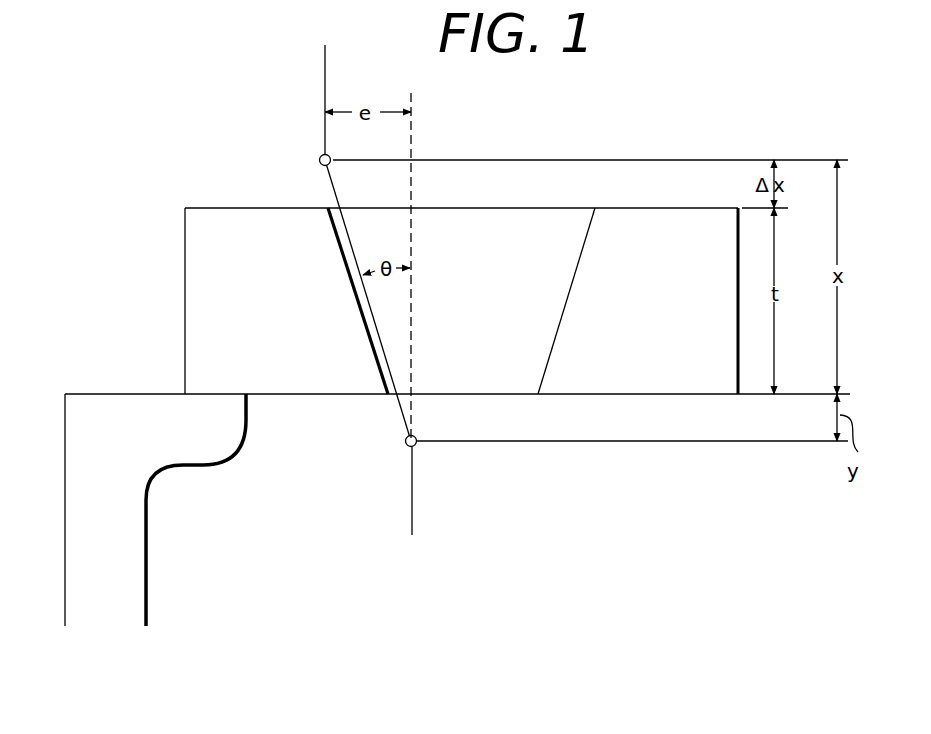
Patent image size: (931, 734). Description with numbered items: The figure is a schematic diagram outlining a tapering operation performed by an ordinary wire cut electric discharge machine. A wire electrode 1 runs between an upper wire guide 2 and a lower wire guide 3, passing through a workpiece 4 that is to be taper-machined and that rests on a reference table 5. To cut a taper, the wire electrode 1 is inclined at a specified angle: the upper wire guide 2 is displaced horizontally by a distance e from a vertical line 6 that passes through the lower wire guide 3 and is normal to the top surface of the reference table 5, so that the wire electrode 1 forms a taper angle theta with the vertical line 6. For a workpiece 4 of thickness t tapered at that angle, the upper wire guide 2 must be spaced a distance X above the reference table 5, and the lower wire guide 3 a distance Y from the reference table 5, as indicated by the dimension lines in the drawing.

The wire electrode 1 is at (323, 88).
The upper wire guide 2 is at (320, 156).
The lower wire guide 3 is at (407, 447).
The workpiece 4 is at (184, 262).
The reference table 5 is at (198, 449).
The vertical line 6 is at (411, 147).